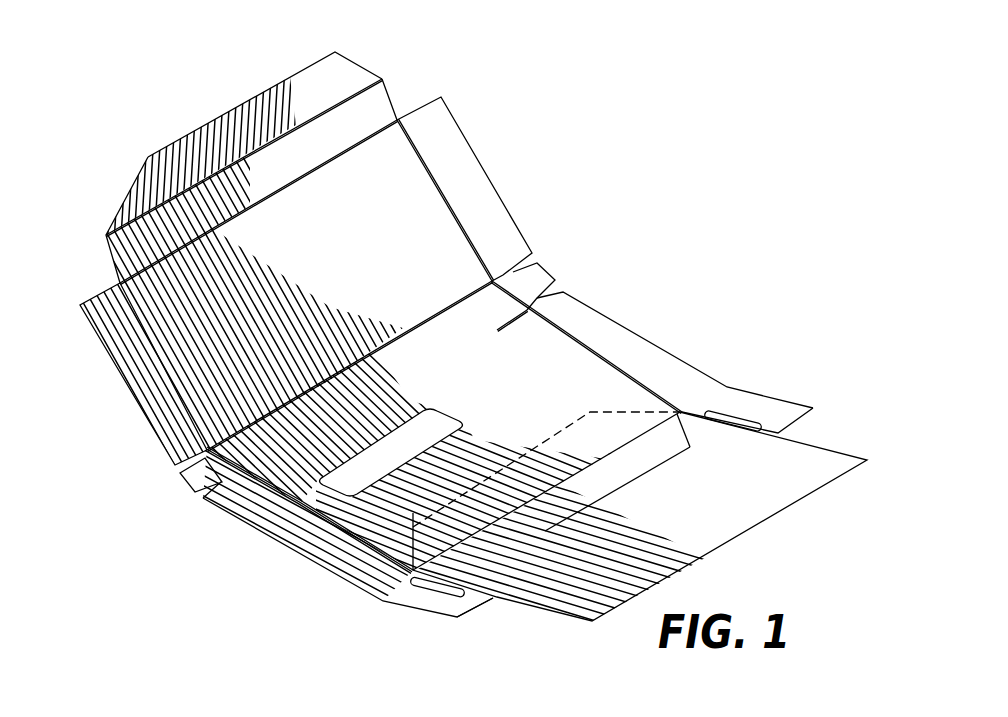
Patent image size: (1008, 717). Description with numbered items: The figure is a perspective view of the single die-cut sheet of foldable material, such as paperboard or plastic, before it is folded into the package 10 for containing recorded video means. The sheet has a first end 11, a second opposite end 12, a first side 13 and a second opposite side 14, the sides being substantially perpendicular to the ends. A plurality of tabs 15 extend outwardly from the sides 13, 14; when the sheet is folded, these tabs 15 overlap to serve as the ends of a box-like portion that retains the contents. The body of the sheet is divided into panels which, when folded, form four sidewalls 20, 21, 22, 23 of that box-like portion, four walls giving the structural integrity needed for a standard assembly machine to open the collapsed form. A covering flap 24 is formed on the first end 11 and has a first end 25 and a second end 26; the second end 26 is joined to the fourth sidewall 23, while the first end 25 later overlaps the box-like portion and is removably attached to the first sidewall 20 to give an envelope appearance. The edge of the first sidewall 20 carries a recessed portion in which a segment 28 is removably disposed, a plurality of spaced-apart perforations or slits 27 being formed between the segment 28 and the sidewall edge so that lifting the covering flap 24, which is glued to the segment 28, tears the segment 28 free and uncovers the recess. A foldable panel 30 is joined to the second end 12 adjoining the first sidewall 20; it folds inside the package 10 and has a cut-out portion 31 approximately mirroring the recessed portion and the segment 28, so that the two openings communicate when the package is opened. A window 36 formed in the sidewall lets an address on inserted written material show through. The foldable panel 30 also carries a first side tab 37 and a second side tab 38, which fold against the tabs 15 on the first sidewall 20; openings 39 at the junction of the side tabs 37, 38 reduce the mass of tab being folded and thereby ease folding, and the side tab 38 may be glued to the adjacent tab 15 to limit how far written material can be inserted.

The package 10 is at (610, 112).
The first end 11 is at (165, 147).
The second opposite end 12 is at (690, 562).
The first side 13 is at (460, 220).
The second opposite side 14 is at (152, 343).
The tabs 15 is at (438, 125).
The first sidewall 20 is at (613, 427).
The second sidewall 21 is at (525, 238).
The third sidewall 22 is at (400, 202).
The fourth sidewall 23 is at (367, 103).
The covering flap 24 is at (290, 80).
The first end of the covering flap 25 is at (245, 100).
The second end of the covering flap 26 is at (339, 97).
The perforations or slits 27 is at (412, 553).
The segment 28 is at (646, 402).
The foldable panel 30 is at (736, 521).
The cut-out portion 31 is at (500, 545).
The window 36 is at (268, 529).
The first side tab 37 is at (463, 607).
The second side tab 38 is at (787, 402).
The openings 39 is at (737, 407).